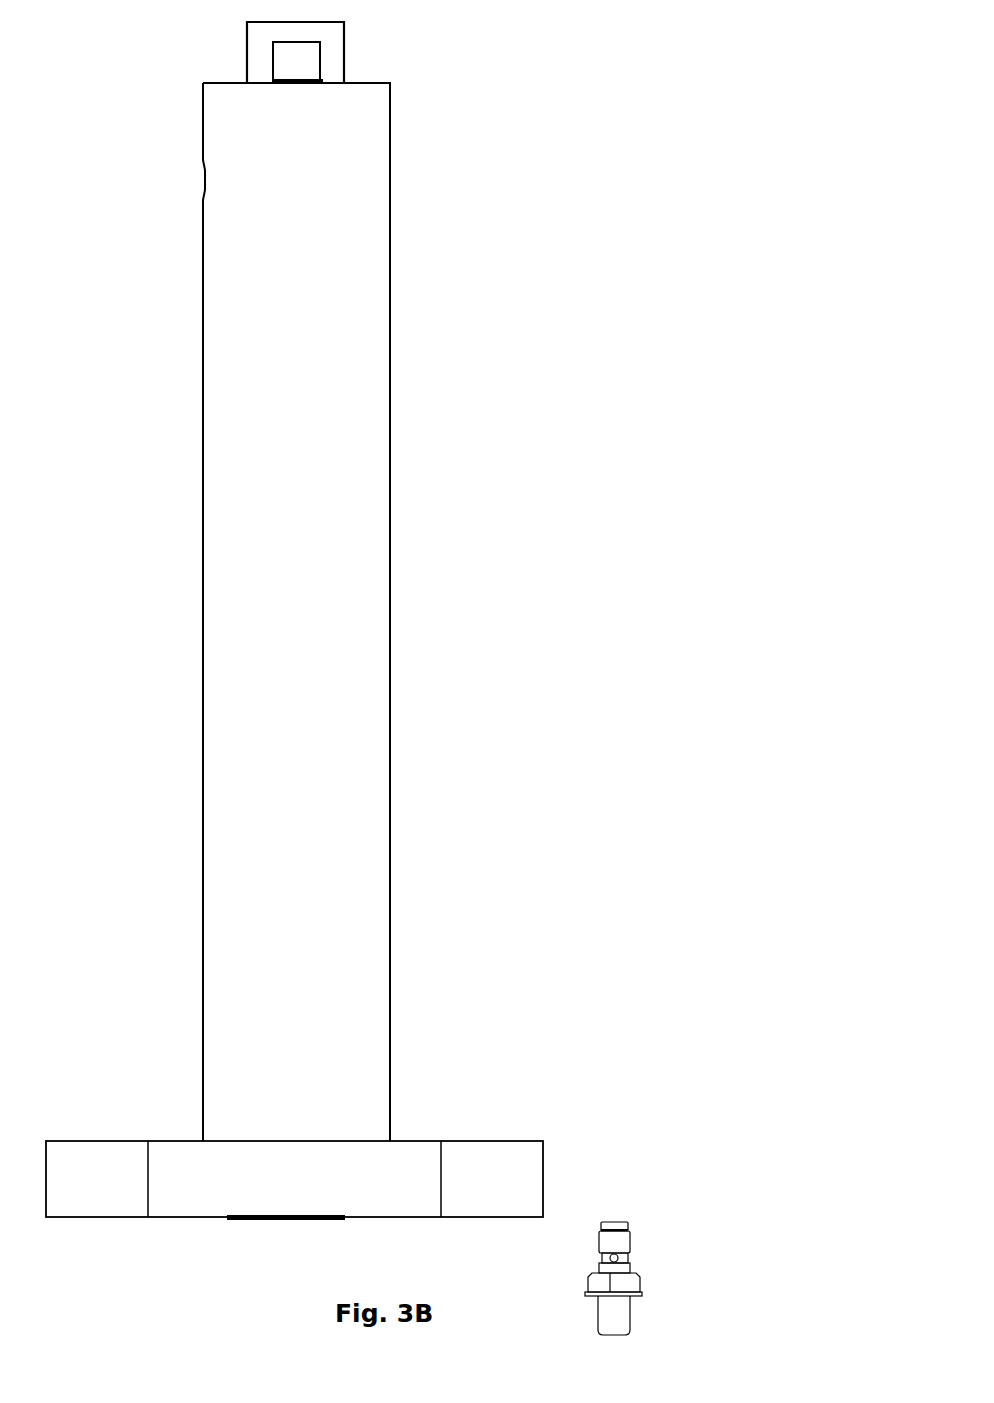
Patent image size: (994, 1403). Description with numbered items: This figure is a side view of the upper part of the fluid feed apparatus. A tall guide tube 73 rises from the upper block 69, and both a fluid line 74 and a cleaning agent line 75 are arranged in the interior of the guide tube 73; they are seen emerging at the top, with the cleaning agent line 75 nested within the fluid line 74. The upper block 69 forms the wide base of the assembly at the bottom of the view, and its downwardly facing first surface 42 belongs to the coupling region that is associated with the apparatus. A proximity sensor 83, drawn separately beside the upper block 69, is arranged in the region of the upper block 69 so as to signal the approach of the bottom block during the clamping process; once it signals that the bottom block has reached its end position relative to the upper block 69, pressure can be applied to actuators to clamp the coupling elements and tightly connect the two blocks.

The first surface 42 is at (167, 1228).
The upper block 69 is at (530, 1186).
The guide tube 73 is at (377, 591).
The fluid line 74 is at (337, 29).
The cleaning agent line 75 is at (277, 53).
The proximity sensor 83 is at (632, 1283).